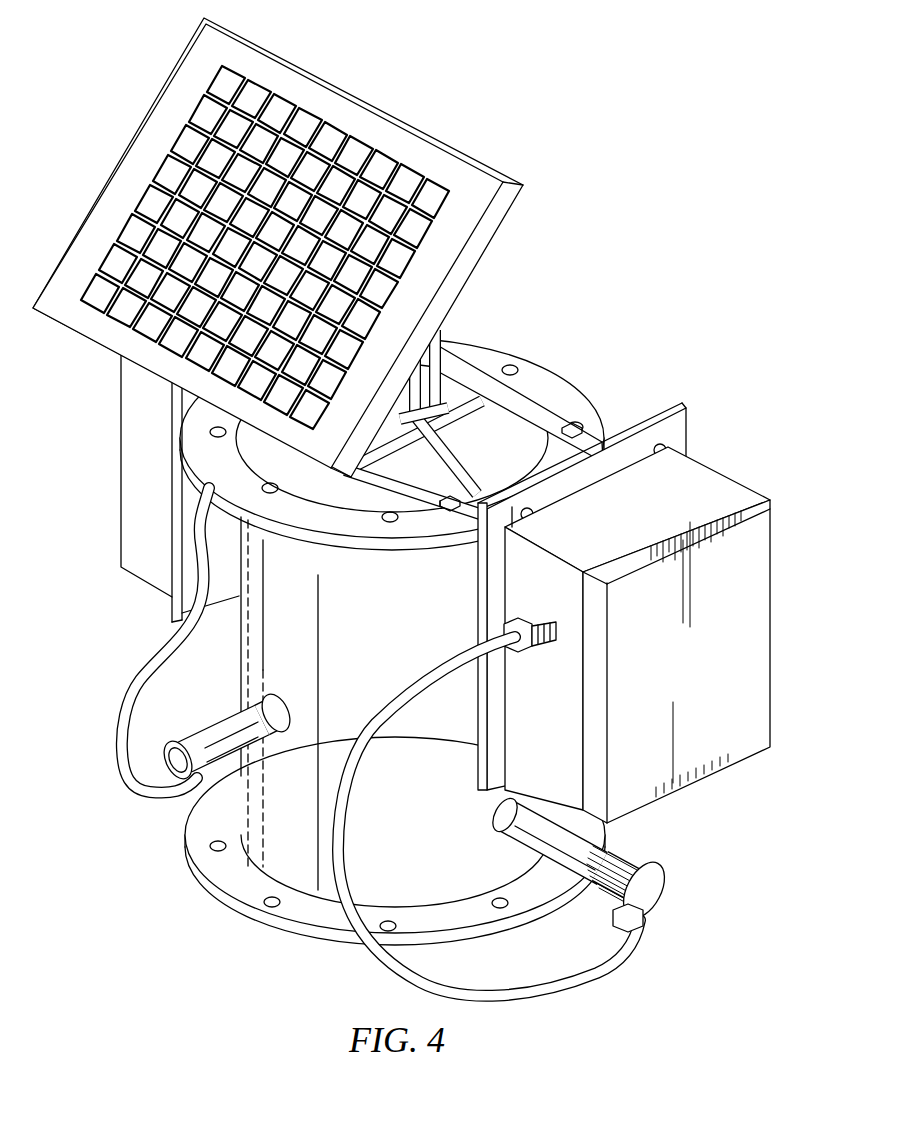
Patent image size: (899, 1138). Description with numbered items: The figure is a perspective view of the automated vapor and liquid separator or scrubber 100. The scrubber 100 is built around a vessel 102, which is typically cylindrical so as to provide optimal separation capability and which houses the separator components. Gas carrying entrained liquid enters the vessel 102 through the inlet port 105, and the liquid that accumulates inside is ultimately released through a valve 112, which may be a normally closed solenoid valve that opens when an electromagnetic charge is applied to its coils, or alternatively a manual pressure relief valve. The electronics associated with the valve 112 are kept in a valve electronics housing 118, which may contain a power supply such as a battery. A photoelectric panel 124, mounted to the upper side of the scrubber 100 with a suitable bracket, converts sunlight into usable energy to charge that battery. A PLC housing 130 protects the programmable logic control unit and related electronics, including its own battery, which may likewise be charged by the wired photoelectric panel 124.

The automated vapor and liquid separator or scrubber 100 is at (432, 507).
The vessel 102 is at (285, 824).
The inlet port 105 is at (218, 716).
The valve 112 is at (656, 838).
The valve electronics housing 118 is at (748, 775).
The photoelectric panel 124 is at (490, 251).
The PLC housing 130 is at (133, 588).